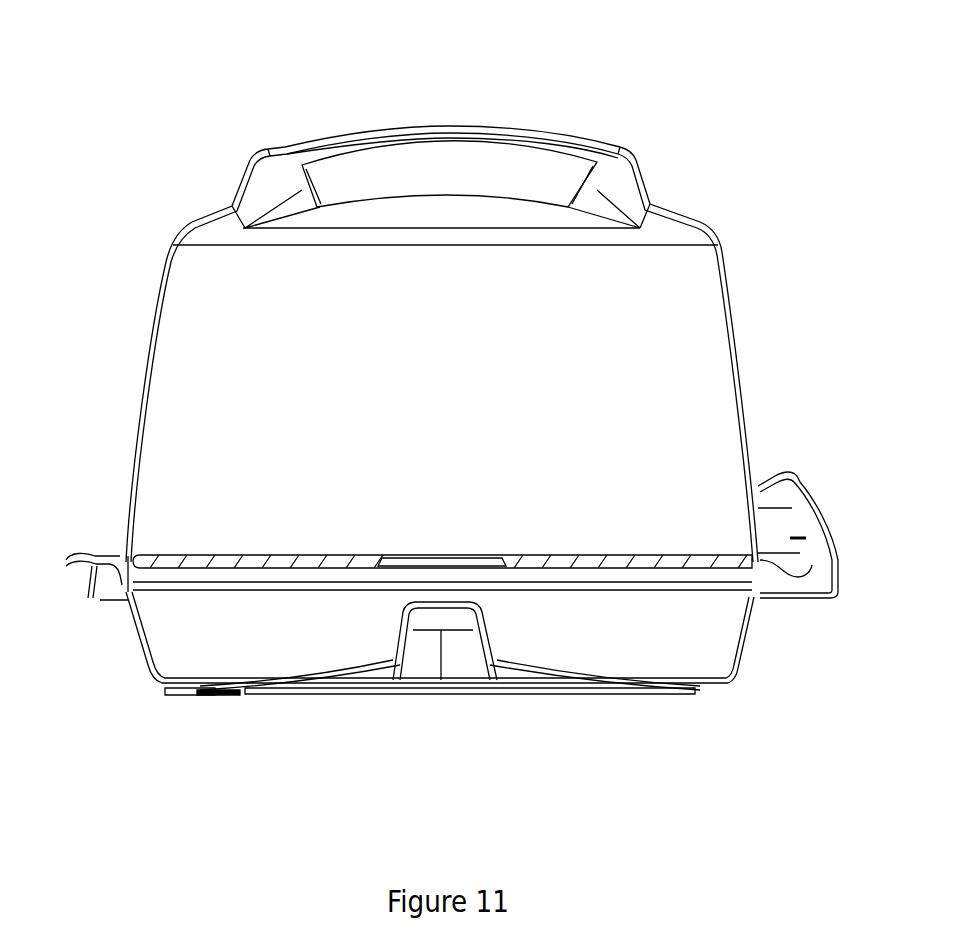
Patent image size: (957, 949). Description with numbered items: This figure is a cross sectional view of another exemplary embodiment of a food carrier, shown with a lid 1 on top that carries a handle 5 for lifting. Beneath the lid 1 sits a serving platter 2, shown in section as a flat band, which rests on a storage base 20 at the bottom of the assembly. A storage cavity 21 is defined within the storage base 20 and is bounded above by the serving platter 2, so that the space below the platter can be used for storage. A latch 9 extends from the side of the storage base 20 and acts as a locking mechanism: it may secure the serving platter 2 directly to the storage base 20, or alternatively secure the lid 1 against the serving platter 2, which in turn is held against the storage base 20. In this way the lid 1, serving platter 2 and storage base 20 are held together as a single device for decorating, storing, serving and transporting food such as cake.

The lid 1 is at (741, 259).
The serving platter 2 is at (175, 543).
The handle 5 is at (448, 108).
The latch 9 is at (814, 481).
The storage base 20 is at (731, 709).
The storage cavity 21 is at (244, 665).